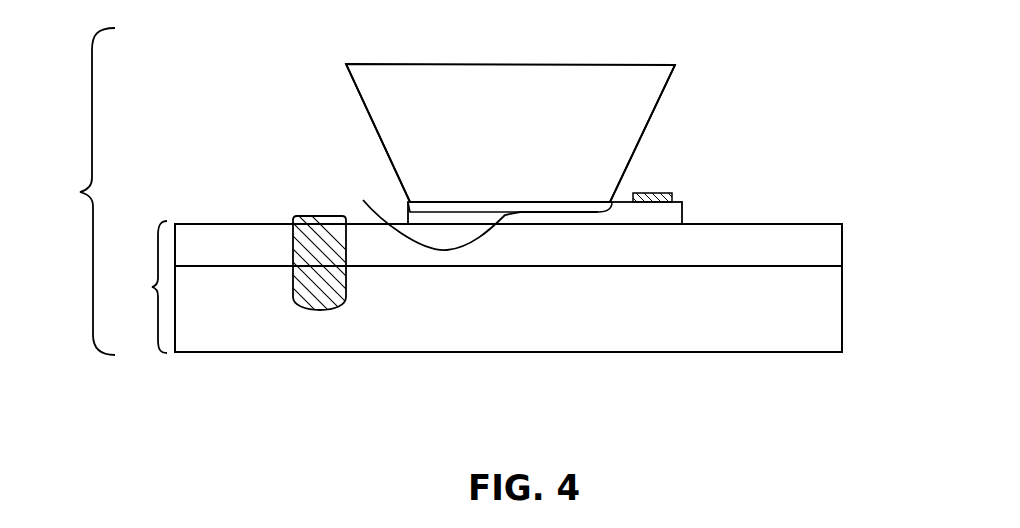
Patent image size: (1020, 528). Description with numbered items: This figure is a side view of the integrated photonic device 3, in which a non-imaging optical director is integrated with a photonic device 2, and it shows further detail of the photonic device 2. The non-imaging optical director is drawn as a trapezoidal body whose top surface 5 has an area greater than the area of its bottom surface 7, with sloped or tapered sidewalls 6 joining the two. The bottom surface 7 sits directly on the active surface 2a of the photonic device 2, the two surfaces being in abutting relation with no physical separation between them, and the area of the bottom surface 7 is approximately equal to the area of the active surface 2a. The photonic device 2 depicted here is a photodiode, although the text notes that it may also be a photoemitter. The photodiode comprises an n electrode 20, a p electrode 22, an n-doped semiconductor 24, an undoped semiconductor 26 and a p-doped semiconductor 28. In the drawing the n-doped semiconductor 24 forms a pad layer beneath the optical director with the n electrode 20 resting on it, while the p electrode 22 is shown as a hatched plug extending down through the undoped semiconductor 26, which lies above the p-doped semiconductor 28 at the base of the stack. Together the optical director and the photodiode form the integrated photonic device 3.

The photonic device 2 is at (147, 285).
The active surface 2a is at (363, 200).
The integrated photonic device 3 is at (75, 188).
The top surface 5 is at (427, 63).
The sidewalls 6 is at (368, 120).
The bottom surface 7 is at (502, 200).
The n electrode 20 is at (670, 195).
The p electrode 22 is at (292, 218).
The n-doped semiconductor 24 is at (685, 212).
The undoped semiconductor 26 is at (842, 238).
The p-doped semiconductor 28 is at (842, 320).